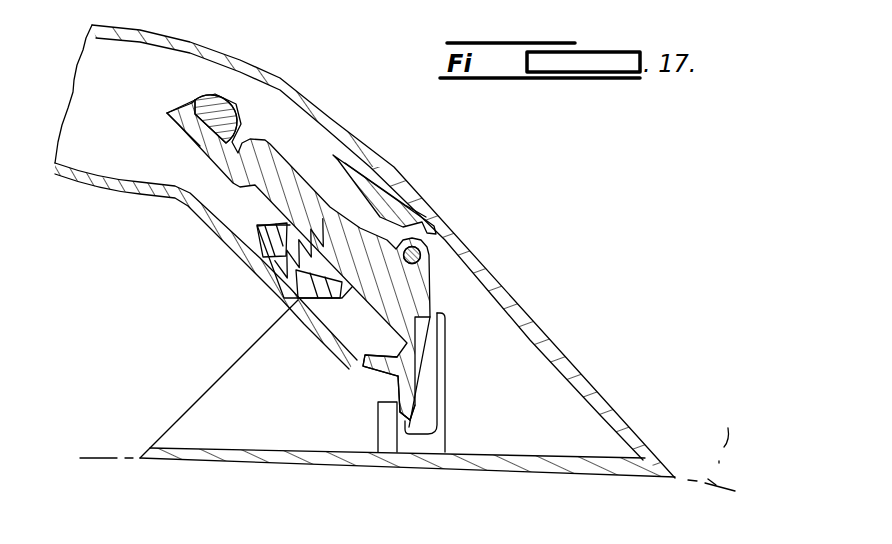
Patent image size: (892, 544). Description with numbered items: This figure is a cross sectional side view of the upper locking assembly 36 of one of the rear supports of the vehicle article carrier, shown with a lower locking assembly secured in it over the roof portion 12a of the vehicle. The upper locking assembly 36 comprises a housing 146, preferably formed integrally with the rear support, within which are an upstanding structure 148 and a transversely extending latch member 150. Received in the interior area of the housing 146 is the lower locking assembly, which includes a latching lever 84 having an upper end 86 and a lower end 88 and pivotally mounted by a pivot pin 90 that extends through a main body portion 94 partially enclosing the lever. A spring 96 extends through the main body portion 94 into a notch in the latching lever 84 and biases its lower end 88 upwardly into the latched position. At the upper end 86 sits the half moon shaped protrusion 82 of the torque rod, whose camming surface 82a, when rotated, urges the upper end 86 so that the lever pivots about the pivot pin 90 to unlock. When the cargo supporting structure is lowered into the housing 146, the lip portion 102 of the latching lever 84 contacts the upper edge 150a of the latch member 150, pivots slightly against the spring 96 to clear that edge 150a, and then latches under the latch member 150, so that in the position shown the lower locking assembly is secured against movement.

The roof portion 12a is at (733, 443).
The upper locking assembly 36 is at (540, 289).
The half moon shaped protrusion 82 is at (217, 108).
The camming surface 82a is at (173, 116).
The latching lever 84 is at (262, 190).
The upper end 86 is at (183, 128).
The lower end 88 is at (423, 360).
The pivot pin 90 is at (421, 256).
The main body portion 94 is at (400, 208).
The spring 96 is at (273, 280).
The lip portion 102 is at (410, 420).
The housing 146 is at (572, 380).
The upstanding structure 148 is at (443, 395).
The transversely extending latch member 150 is at (403, 385).
The upper edge 150a is at (367, 353).